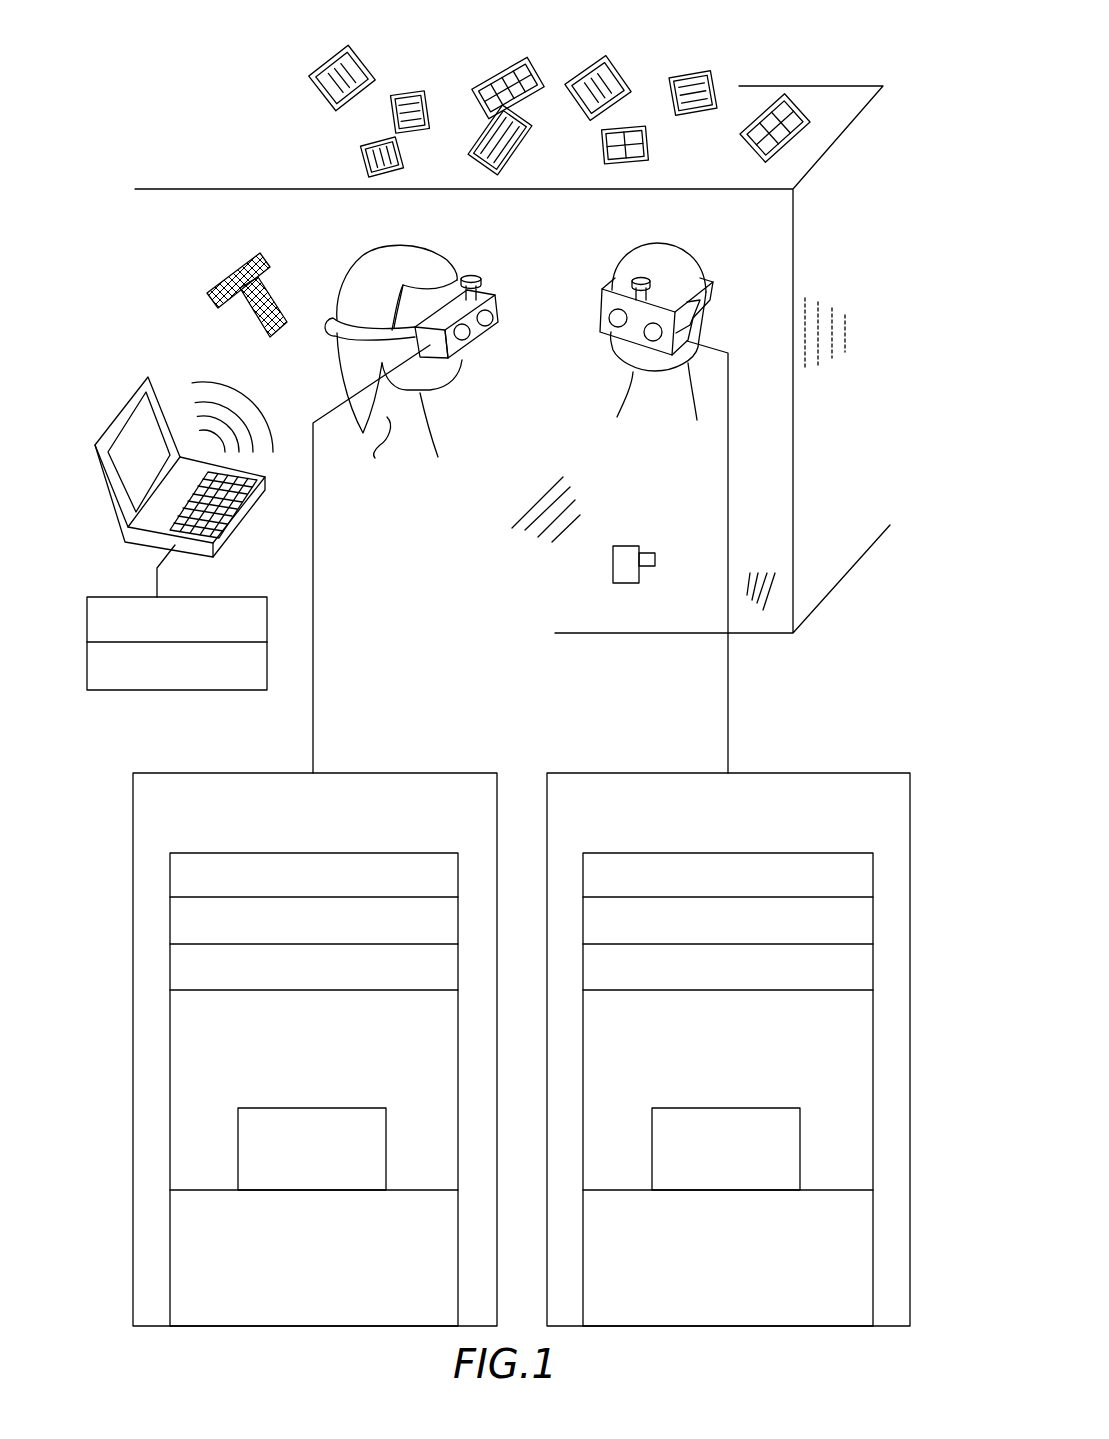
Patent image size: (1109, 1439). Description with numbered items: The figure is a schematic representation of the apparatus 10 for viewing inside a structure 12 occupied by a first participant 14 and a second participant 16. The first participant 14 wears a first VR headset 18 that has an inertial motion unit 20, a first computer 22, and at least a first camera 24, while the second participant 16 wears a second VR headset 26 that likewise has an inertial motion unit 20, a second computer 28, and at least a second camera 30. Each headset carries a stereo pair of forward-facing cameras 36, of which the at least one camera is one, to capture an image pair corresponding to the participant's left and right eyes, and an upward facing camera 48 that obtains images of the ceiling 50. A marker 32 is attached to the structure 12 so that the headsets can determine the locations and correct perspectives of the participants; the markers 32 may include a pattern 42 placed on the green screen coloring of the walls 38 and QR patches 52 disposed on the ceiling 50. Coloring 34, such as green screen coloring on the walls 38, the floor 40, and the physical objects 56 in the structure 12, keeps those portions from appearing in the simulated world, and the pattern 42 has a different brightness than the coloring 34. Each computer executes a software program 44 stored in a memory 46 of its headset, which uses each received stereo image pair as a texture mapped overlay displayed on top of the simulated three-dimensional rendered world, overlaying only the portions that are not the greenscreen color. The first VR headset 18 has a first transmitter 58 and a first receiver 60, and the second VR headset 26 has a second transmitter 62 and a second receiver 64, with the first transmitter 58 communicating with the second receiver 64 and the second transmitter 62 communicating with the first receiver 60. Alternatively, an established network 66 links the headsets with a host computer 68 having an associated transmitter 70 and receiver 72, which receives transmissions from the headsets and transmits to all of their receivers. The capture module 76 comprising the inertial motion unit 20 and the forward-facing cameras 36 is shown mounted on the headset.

The apparatus 10 is at (217, 132).
The structure 12 is at (843, 127).
The first participant 14 is at (373, 432).
The second participant 16 is at (692, 398).
The first VR headset 18 is at (440, 363).
The inertial motion unit 20 is at (387, 867).
The first computer 22 is at (452, 920).
The first camera 24 is at (438, 968).
The second VR headset 26 is at (600, 343).
The second computer 28 is at (863, 917).
The second camera 30 is at (860, 968).
The marker 32 is at (358, 163).
The coloring 34 is at (862, 317).
The forward-facing cameras 36 is at (598, 306).
The walls 38 is at (636, 501).
The floor 40 is at (810, 600).
The pattern 42 is at (282, 337).
The software program 44 is at (373, 1147).
The memory 46 is at (428, 1038).
The upward facing camera 48 is at (475, 273).
The ceiling 50 is at (830, 103).
The QR patches 52 is at (488, 83).
The physical objects 56 is at (610, 572).
The first transmitter 58 is at (326, 1231).
The first receiver 60 is at (326, 1286).
The second transmitter 62 is at (740, 1231).
The second receiver 64 is at (743, 1286).
The network 66 is at (287, 462).
The host computer 68 is at (158, 377).
The transmitter 70 is at (257, 613).
The receiver 72 is at (255, 667).
The capture module 76 is at (170, 843).